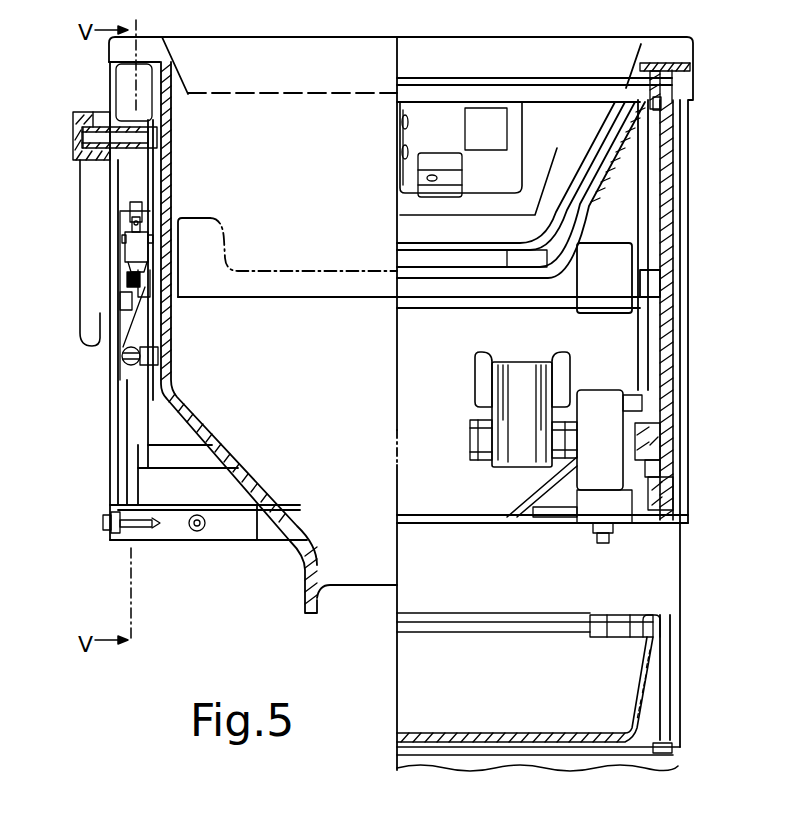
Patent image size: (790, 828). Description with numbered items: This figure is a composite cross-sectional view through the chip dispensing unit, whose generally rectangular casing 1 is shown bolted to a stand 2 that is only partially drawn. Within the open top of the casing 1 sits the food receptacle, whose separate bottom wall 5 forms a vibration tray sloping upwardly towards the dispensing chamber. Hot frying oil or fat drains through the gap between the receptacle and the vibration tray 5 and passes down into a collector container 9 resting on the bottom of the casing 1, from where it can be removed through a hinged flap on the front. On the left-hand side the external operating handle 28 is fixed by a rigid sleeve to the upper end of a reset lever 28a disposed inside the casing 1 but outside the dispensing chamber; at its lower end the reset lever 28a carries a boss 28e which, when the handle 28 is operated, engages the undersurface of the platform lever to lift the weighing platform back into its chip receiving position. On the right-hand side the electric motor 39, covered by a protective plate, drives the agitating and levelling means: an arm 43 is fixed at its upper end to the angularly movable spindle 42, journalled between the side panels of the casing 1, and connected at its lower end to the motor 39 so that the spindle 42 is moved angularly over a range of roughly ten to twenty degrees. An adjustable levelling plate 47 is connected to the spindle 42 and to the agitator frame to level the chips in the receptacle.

The casing 1 is at (109, 442).
The stand 2 is at (672, 760).
The bottom wall (vibration tray) 5 is at (583, 222).
The collector container 9 is at (539, 697).
The operating handle 28 is at (80, 206).
The reset lever 28a is at (112, 277).
The boss 28e is at (115, 305).
The electric motor 39 is at (502, 468).
The spindle 42 is at (657, 104).
The arm 43 is at (668, 268).
The adjustable levelling plate 47 is at (540, 165).